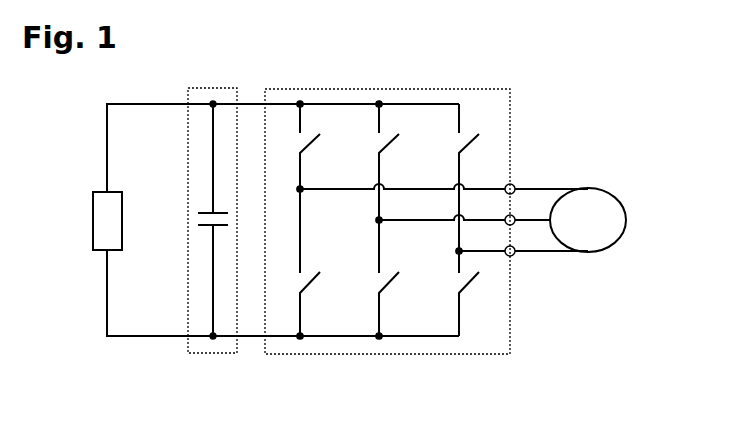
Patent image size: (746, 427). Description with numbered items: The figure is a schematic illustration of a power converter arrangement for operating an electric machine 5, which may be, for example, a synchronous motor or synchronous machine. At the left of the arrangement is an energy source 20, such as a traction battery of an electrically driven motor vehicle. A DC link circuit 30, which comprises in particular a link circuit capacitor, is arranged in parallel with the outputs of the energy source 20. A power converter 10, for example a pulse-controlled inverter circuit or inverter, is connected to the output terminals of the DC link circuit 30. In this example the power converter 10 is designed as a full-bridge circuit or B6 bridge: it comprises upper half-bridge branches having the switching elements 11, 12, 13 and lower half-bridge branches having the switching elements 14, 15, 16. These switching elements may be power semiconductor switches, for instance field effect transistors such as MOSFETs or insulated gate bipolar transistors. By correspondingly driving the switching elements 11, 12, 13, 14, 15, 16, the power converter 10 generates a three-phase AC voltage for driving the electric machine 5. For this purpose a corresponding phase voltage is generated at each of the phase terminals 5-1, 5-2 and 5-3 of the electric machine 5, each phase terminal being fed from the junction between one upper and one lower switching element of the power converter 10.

The electric machine 5 is at (627, 219).
The phase terminal 5-1 is at (516, 184).
The phase terminal 5-2 is at (516, 224).
The phase terminal 5-3 is at (517, 256).
The power converter 10 is at (284, 356).
The switching element 11 is at (312, 128).
The switching element 12 is at (391, 128).
The switching element 13 is at (471, 128).
The switching element 14 is at (318, 280).
The switching element 15 is at (397, 280).
The switching element 16 is at (477, 280).
The energy source 20 is at (93, 215).
The DC link circuit 30 is at (210, 355).